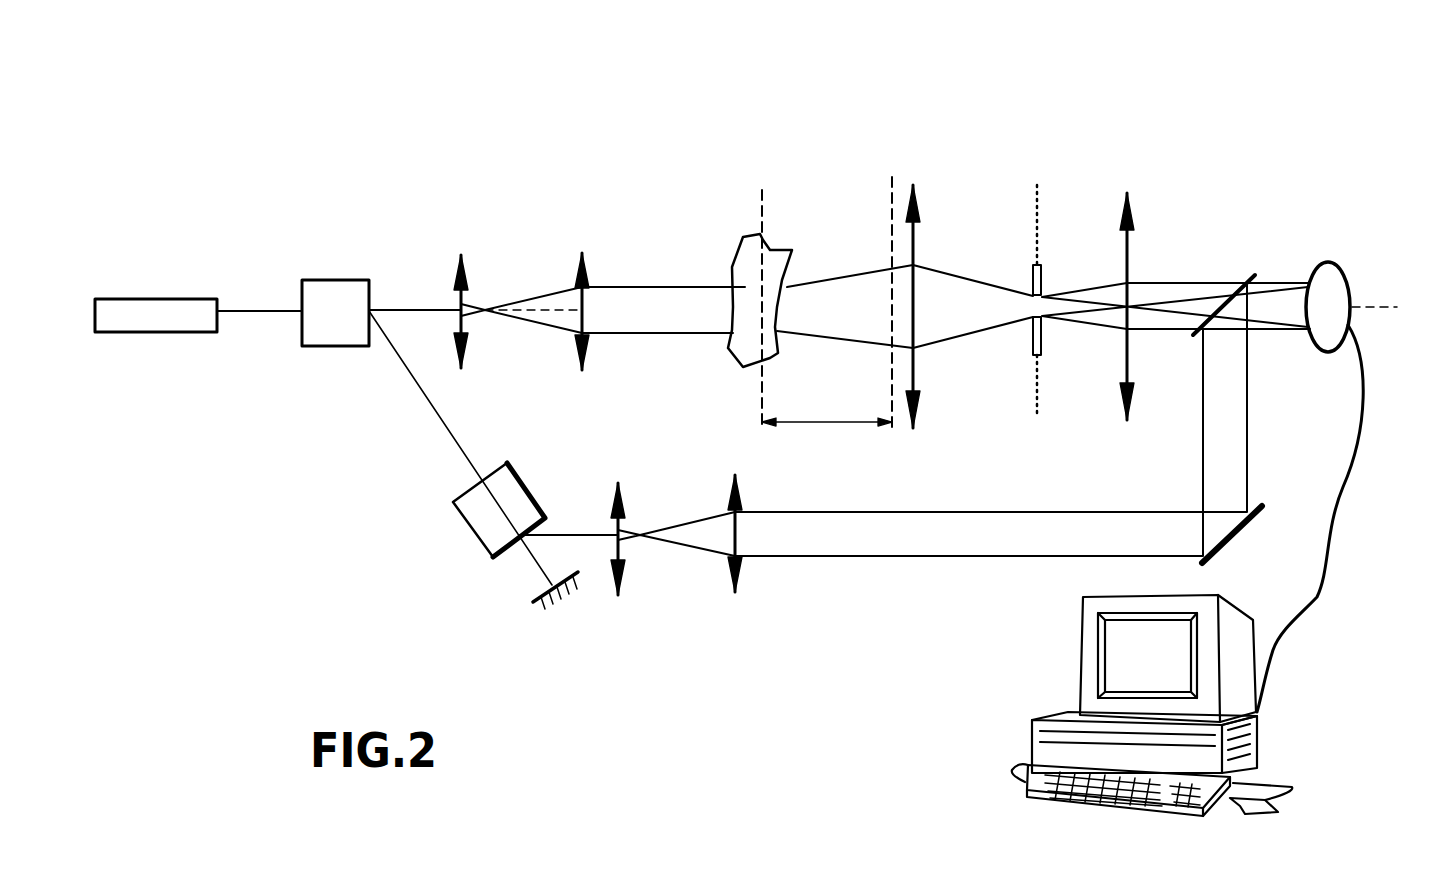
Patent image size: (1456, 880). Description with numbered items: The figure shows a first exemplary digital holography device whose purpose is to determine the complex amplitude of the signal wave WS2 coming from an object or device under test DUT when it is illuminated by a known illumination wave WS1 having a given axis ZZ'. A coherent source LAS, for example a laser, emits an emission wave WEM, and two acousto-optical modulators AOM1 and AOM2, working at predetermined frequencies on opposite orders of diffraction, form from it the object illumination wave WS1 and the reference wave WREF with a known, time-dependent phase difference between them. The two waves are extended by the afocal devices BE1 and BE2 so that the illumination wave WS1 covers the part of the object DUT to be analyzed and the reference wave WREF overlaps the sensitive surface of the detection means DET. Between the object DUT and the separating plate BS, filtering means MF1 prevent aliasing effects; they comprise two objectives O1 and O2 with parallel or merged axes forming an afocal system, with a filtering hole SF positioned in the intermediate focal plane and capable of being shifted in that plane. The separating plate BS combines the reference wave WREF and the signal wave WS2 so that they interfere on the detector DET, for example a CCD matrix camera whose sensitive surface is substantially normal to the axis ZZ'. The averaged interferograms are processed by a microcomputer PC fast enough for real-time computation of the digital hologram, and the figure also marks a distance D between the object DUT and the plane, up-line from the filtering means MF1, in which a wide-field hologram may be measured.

The coherent source LAS is at (150, 308).
The emission wave WEM is at (248, 308).
The acousto-optical modulator AOM1 is at (338, 292).
The afocal device BE1 is at (592, 243).
The illumination wave WS1 is at (657, 292).
The device under test DUT is at (778, 262).
The signal wave WS2 is at (852, 275).
The distance D is at (827, 436).
The filtering means MF1 is at (1135, 103).
The first objective O1 is at (913, 195).
The filtering hole SF is at (1032, 268).
The second objective O2 is at (1128, 212).
The separating plate BS is at (1220, 300).
The detection means DET is at (1347, 277).
The axis ZZ' is at (1400, 292).
The microcomputer PC is at (1088, 655).
The acousto-optical modulator AOM2 is at (483, 535).
The afocal device BE2 is at (605, 600).
The reference wave WREF is at (848, 557).